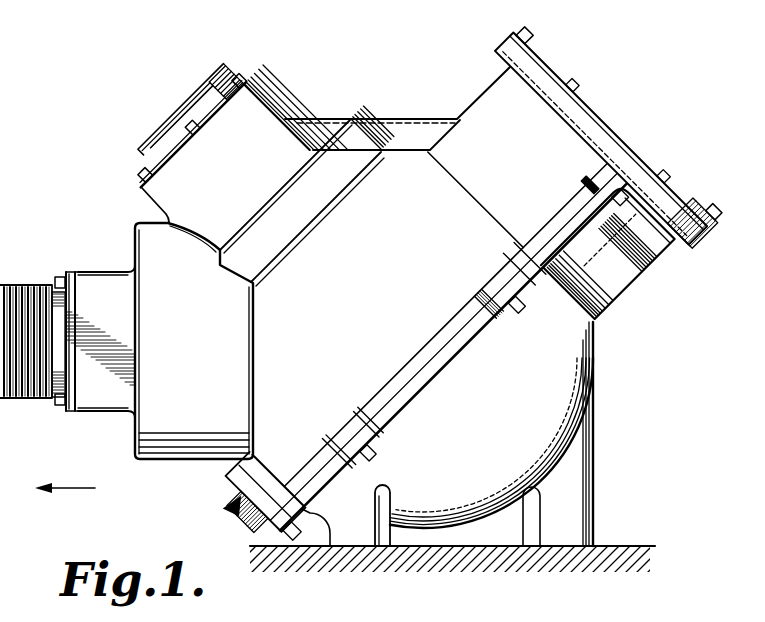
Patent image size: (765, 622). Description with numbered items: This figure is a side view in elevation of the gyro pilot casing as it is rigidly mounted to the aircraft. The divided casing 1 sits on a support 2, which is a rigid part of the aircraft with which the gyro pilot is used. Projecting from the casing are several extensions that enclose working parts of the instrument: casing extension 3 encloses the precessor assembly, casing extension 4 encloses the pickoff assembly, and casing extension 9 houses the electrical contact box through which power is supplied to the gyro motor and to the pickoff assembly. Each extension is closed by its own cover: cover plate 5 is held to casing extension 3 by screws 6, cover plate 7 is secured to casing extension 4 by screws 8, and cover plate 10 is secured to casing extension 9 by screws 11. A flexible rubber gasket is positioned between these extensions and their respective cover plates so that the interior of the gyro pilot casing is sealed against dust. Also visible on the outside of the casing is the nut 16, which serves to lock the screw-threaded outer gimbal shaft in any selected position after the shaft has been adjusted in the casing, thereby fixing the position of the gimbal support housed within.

The divided casing 1 is at (560, 371).
The support 2 is at (622, 556).
The casing extension 3 is at (288, 113).
The casing extension 4 is at (614, 277).
The cover plate 5 is at (197, 107).
The screws 6 is at (237, 72).
The cover plate 7 is at (593, 118).
The screws 8 is at (530, 34).
The casing extension 9 is at (103, 400).
The cover plate 10 is at (70, 413).
The screws 11 is at (56, 283).
The nut 16 is at (226, 491).